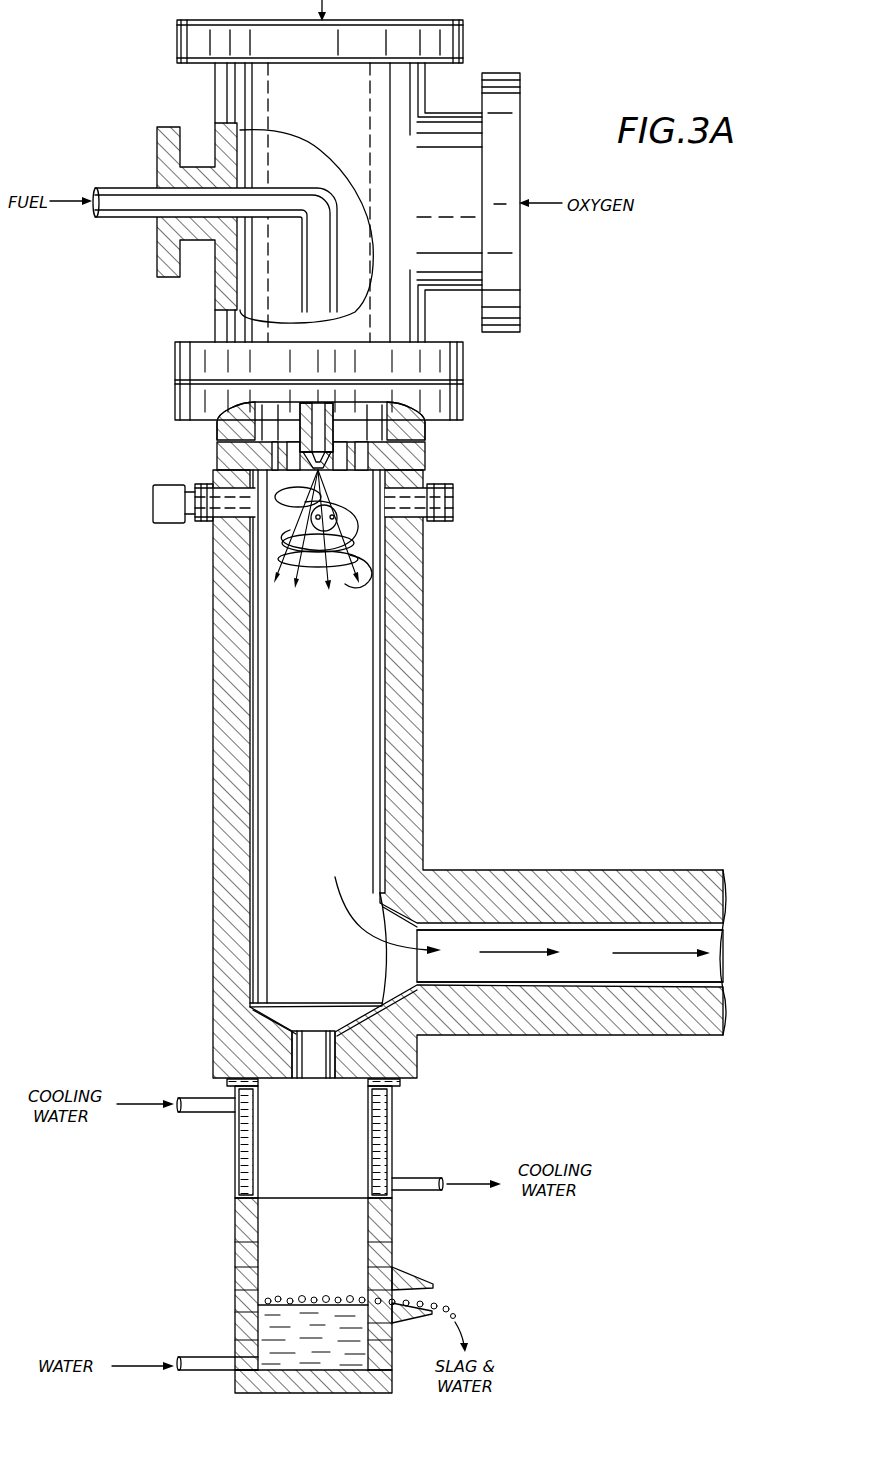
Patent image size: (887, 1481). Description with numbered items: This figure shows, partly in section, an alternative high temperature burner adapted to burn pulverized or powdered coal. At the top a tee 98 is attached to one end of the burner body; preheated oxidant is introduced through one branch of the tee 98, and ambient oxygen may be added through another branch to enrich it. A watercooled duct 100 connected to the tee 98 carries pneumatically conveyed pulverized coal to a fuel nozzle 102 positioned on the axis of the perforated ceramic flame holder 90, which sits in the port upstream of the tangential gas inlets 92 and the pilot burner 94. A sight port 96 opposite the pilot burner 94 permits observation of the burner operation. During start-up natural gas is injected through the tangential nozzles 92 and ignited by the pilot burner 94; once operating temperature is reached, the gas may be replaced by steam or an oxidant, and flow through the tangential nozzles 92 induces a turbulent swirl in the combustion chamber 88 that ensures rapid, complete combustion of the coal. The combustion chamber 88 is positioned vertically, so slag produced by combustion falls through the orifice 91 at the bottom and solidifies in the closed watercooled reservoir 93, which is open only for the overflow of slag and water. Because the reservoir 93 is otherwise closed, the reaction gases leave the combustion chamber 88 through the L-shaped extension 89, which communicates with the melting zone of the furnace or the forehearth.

The combustion chamber 88 is at (384, 645).
The L-shaped extension 89 is at (651, 975).
The flame holder 90 is at (397, 446).
The orifice 91 is at (296, 1041).
The tangential gas inlets 92 is at (207, 489).
The watercooled reservoir 93 is at (238, 1305).
The pilot burner 94 is at (162, 524).
The sight port 96 is at (454, 504).
The tee 98 is at (217, 293).
The watercooled duct 100 is at (307, 297).
The fuel nozzle 102 is at (321, 471).